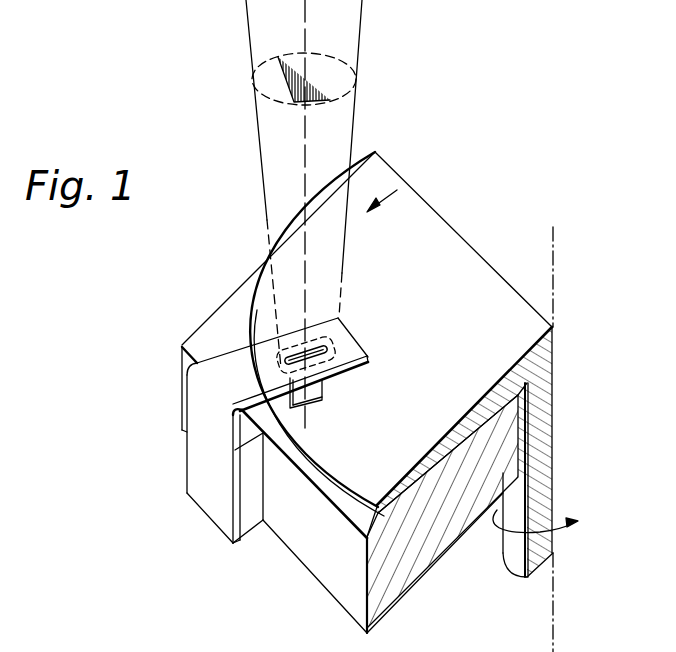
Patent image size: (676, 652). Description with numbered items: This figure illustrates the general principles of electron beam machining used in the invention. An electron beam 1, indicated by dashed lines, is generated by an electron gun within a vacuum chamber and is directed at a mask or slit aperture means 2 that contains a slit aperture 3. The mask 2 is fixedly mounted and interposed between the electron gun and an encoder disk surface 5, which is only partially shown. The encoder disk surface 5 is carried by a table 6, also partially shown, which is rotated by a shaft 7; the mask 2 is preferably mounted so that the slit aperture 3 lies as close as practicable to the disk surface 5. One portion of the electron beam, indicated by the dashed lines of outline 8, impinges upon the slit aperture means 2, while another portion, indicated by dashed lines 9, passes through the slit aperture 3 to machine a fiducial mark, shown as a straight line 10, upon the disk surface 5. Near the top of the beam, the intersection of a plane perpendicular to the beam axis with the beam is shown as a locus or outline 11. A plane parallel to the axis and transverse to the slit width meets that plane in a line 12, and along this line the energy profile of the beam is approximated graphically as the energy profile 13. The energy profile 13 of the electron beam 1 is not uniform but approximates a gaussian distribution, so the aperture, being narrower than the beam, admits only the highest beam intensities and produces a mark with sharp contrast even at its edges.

The electron beam 1 is at (362, 18).
The mask or slit aperture means 2 is at (225, 358).
The slit aperture 3 is at (250, 366).
The encoder disk surface 5 is at (425, 240).
The table 6 is at (437, 446).
The shaft 7 is at (542, 425).
The outline 8 is at (336, 363).
The dashed lines 9 is at (325, 386).
The straight line 10 is at (312, 403).
The locus or outline 11 is at (357, 78).
The line 12 is at (297, 58).
The energy profile 13 is at (290, 88).